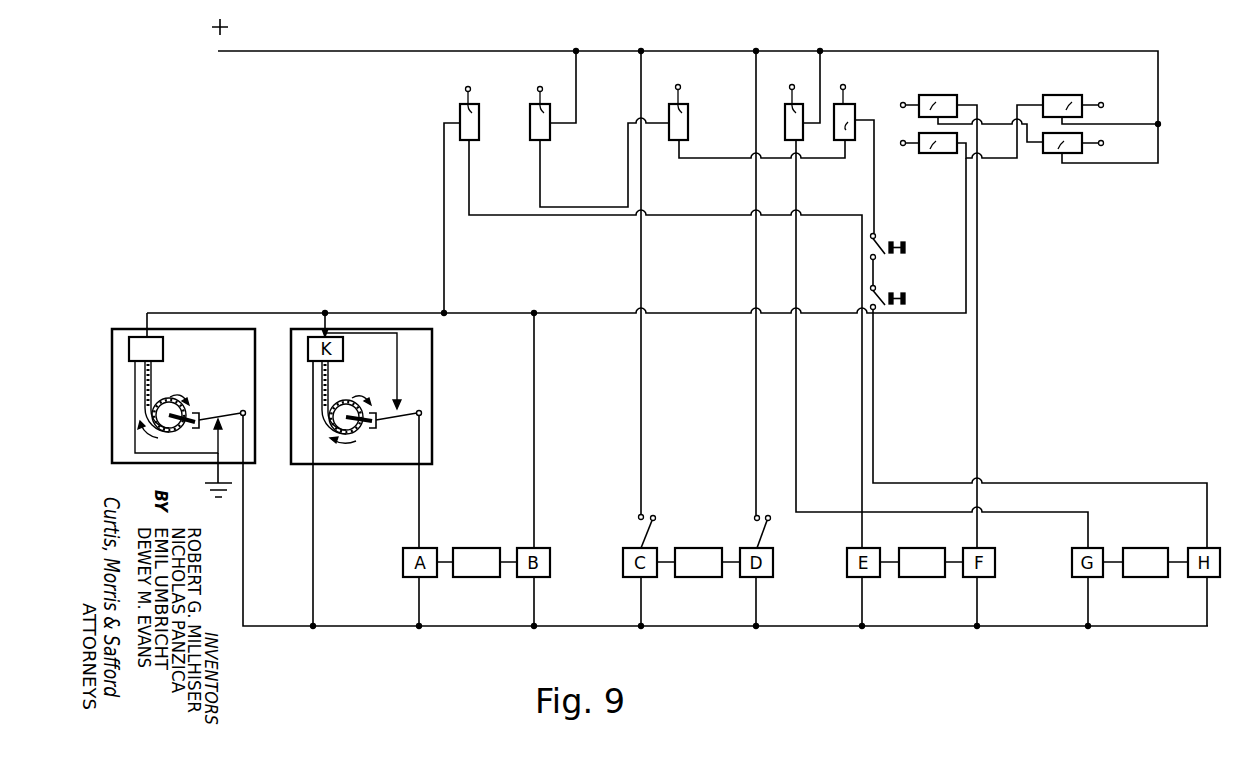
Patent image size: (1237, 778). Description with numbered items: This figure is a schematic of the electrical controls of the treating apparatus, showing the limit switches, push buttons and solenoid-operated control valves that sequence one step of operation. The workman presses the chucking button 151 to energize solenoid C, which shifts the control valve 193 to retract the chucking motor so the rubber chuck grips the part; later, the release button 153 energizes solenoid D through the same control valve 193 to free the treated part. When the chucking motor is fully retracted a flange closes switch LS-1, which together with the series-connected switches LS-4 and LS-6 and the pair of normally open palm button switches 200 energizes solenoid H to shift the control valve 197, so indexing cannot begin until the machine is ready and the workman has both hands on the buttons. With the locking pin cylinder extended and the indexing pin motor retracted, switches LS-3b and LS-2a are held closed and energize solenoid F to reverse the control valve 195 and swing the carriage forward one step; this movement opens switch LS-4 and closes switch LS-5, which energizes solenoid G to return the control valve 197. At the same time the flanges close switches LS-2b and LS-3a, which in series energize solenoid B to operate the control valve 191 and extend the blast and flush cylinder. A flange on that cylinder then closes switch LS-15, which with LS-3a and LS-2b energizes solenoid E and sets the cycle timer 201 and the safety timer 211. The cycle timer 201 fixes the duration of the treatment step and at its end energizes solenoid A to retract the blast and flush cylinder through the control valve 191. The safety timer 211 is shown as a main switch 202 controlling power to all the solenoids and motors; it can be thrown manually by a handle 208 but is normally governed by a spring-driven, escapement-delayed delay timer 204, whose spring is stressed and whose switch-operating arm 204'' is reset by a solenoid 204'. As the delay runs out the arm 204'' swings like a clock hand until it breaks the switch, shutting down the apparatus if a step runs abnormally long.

The chucking button 151 is at (653, 518).
The release button 153 is at (764, 518).
The control valve 191 is at (476, 562).
The control valve 193 is at (698, 562).
The control valve 195 is at (922, 562).
The control valve 197 is at (1145, 562).
The palm button switches 200 is at (911, 237).
The cycle timer 201 is at (431, 439).
The main switch 202 is at (246, 412).
The delay timer 204 is at (172, 389).
The solenoid 204' is at (125, 330).
The switch-operating arm 204'' is at (226, 403).
The handle 208 is at (198, 414).
The safety timer 211 is at (253, 448).
The switch LS-15 is at (462, 104).
The switch LS-6 is at (535, 104).
The switch LS-1 is at (685, 104).
The switch LS-5 is at (788, 104).
The switch LS-4 is at (847, 148).
The switch LS-2a is at (934, 98).
The switch LS-2b is at (931, 152).
The switch LS-3a is at (1078, 82).
The switch LS-3b is at (1062, 152).